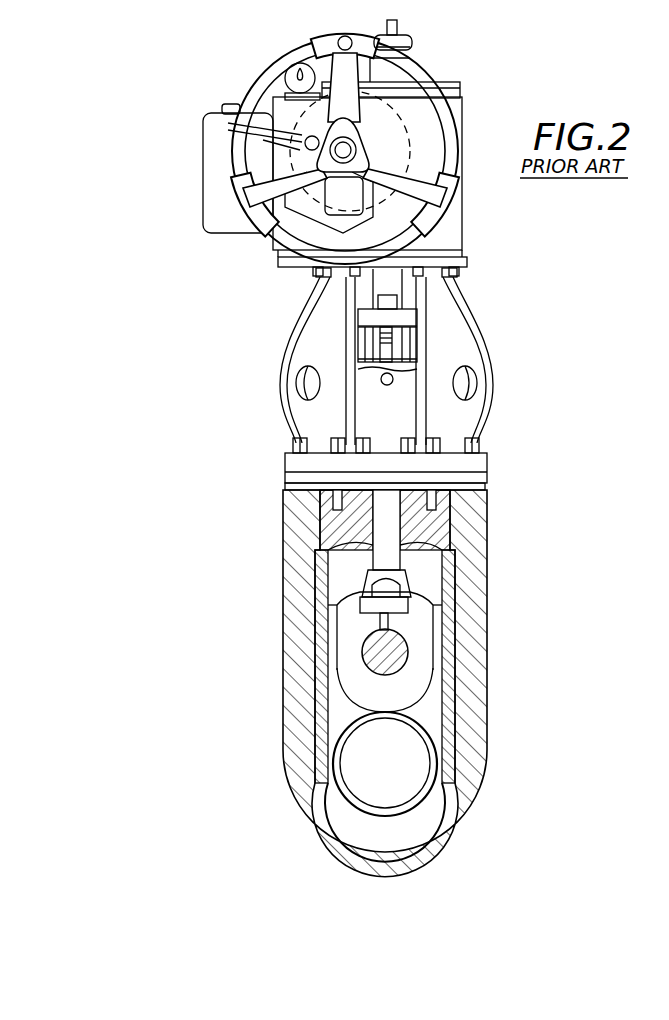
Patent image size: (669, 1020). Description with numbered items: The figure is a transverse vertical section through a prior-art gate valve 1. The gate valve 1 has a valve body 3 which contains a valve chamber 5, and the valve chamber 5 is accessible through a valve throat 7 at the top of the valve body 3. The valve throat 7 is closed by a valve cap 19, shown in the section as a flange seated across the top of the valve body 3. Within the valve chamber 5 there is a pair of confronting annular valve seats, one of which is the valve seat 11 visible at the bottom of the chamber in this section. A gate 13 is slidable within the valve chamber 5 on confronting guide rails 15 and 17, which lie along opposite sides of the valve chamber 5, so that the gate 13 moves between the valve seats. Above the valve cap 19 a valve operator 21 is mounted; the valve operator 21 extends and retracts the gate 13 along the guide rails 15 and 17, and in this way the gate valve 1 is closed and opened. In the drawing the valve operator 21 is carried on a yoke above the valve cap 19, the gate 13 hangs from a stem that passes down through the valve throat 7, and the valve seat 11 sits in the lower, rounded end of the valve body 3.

The gate valve 1 is at (535, 350).
The valve body 3 is at (285, 566).
The valve chamber 5 is at (335, 710).
The valve throat 7 is at (415, 555).
The annular valve seat 11 is at (347, 797).
The gate 13 is at (423, 626).
The guide rail 15 is at (443, 703).
The guide rail 17 is at (323, 665).
The valve cap 19 is at (296, 457).
The valve operator 21 is at (282, 322).